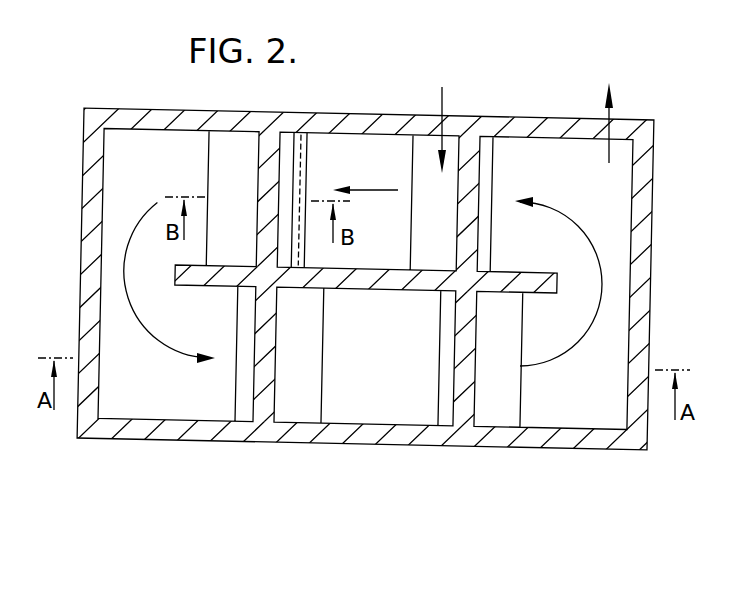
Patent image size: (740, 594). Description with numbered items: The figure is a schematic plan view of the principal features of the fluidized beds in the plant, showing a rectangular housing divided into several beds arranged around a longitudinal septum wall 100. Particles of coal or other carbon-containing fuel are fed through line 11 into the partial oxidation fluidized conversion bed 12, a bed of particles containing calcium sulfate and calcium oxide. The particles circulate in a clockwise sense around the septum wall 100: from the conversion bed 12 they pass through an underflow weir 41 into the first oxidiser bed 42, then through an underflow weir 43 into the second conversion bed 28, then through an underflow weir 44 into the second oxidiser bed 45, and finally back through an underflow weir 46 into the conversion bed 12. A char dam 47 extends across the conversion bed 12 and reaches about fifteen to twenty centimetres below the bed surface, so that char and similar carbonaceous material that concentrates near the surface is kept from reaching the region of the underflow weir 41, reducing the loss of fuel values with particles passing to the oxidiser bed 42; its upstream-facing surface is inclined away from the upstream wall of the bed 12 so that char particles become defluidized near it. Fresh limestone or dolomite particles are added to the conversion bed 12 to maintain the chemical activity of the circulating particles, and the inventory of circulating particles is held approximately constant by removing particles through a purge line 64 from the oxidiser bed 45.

The line 11 is at (442, 96).
The partial oxidation fluidized conversion bed 12 is at (396, 263).
The second conversion bed 28 is at (399, 407).
The underflow weir 41 is at (257, 190).
The first oxidiser bed 42 is at (187, 404).
The underflow weir 43 is at (272, 391).
The underflow weir 44 is at (472, 394).
The second oxidiser bed 45 is at (604, 412).
The underflow weir 46 is at (486, 178).
The char dam 47 is at (307, 172).
The purge line 64 is at (613, 95).
The longitudinal septum wall 100 is at (185, 268).